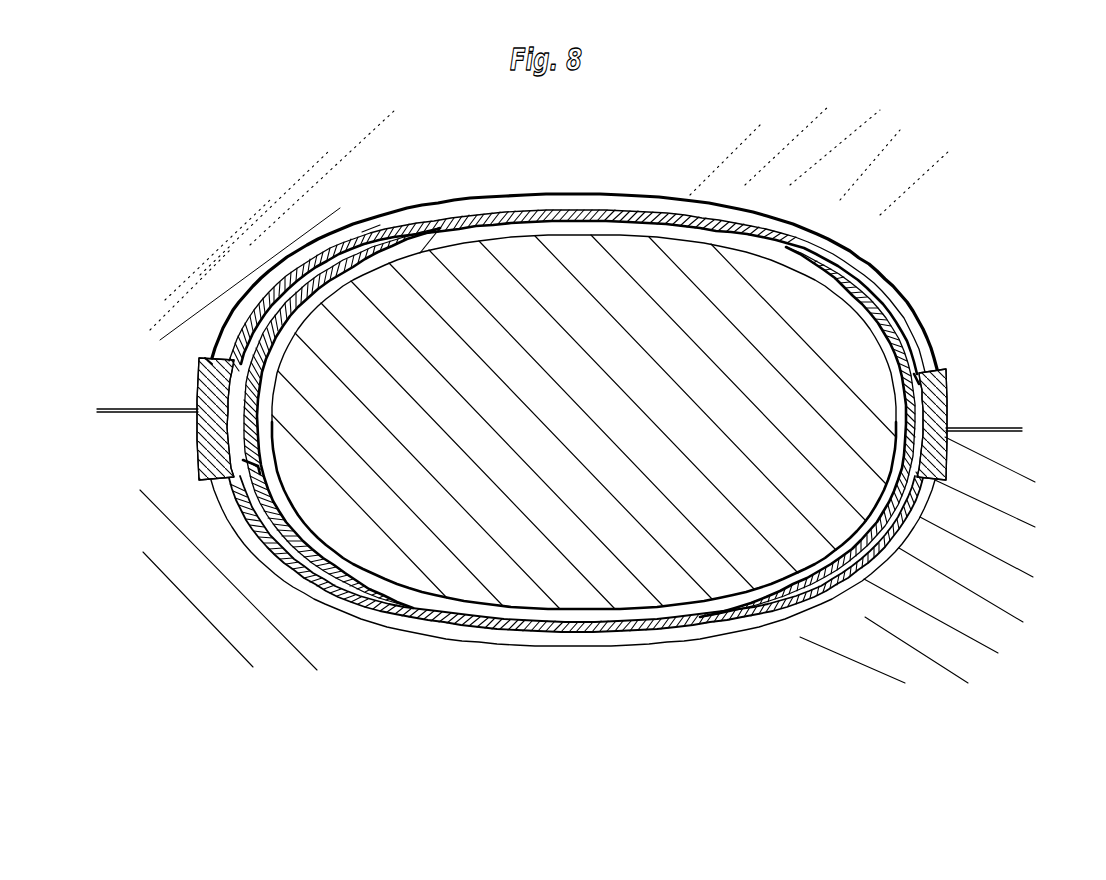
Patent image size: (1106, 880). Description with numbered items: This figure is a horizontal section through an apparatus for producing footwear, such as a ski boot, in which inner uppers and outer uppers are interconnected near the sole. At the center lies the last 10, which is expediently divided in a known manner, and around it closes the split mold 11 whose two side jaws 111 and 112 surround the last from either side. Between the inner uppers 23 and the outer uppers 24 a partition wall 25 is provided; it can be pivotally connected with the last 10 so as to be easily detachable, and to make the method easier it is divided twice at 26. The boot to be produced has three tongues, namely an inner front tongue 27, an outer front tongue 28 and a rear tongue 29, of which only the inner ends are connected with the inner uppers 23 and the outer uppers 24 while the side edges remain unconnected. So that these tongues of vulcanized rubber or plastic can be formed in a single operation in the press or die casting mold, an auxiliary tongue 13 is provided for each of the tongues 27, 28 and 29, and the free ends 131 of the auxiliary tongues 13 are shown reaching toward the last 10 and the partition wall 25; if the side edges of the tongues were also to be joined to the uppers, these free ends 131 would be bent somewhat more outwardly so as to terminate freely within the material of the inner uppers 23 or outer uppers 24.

The last 10 is at (449, 408).
The split mold 11 is at (1064, 232).
The side jaw 111 is at (792, 180).
The side jaw 112 is at (632, 665).
The auxiliary tongue 13 is at (218, 396).
The free ends of the auxiliary tongues 131 is at (362, 232).
The inner uppers 23 is at (550, 224).
The outer uppers 24 is at (505, 200).
The partition wall 25 is at (673, 225).
The division of the partition wall 26 is at (593, 211).
The inner front tongue 27 is at (276, 473).
The outer front tongue 28 is at (240, 463).
The rear tongue 29 is at (917, 393).